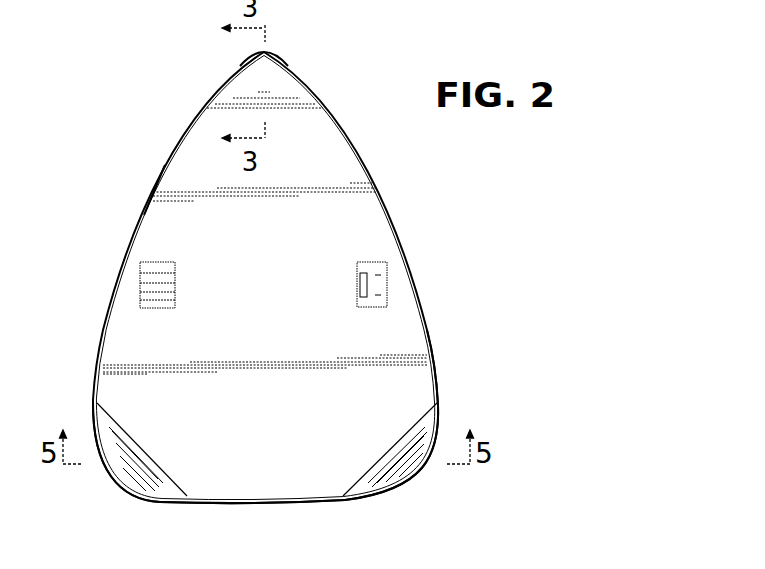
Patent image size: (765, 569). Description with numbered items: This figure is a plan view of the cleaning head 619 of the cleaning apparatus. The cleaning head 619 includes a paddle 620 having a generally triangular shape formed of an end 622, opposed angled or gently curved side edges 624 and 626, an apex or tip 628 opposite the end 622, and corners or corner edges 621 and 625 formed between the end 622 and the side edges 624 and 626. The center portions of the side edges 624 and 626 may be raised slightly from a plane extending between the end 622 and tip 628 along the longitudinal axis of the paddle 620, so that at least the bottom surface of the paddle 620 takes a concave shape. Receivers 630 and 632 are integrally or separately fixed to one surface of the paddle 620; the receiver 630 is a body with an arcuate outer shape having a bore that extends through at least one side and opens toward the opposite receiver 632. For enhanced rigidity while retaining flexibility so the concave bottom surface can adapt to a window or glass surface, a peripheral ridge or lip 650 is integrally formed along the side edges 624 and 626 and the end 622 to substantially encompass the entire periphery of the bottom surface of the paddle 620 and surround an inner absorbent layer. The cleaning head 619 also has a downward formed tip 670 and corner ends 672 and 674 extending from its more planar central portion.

The cleaning head 619 is at (469, 288).
The paddle 620 is at (315, 207).
The corner edge 621 is at (113, 483).
The end 622 is at (263, 505).
The side edge 624 is at (150, 185).
The corner edge 625 is at (417, 478).
The side edge 626 is at (428, 346).
The apex 628 is at (278, 52).
The receiver 630 is at (370, 259).
The receiver 632 is at (157, 259).
The peripheral lip 650 is at (185, 128).
The downward formed tip 670 is at (240, 85).
The corner end 672 is at (107, 433).
The corner end 674 is at (425, 430).